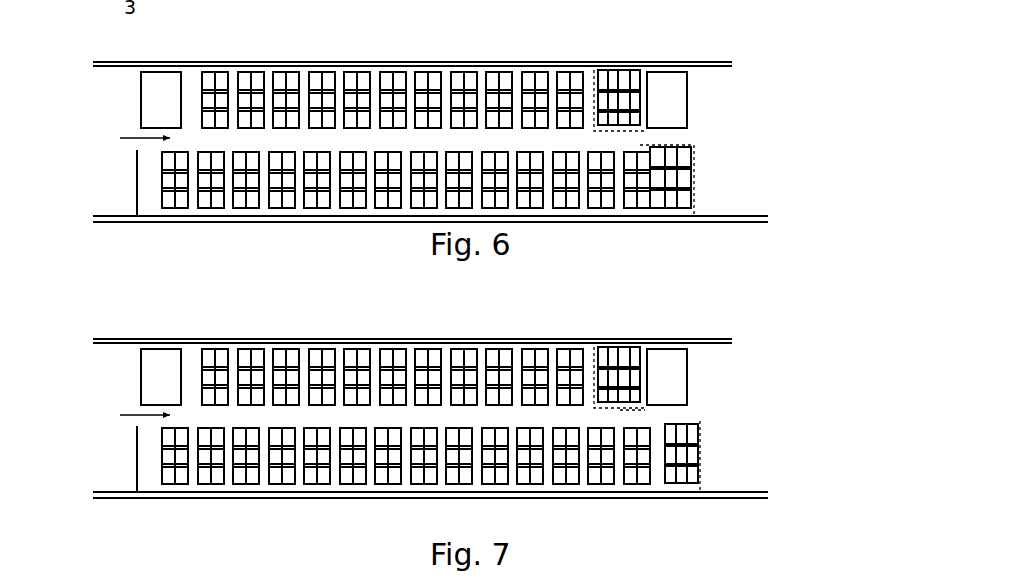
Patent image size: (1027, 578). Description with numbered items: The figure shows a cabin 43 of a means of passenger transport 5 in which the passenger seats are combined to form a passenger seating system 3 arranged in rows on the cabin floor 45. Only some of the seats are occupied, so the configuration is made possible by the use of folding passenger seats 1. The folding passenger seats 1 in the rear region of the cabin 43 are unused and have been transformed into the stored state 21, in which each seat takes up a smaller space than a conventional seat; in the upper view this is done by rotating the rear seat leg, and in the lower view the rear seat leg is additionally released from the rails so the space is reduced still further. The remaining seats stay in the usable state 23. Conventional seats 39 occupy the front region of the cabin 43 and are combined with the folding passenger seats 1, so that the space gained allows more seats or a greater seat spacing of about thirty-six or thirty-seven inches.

In FIG. 6, the folding passenger seat 1 is at (639, 70).
In FIG. 7, the folding passenger seat 1 is at (639, 347).
In FIG. 6, the passenger seating system 3 is at (181, 228).
In FIG. 7, the passenger seating system 3 is at (181, 504).
In FIG. 6, the means of passenger transport 5 is at (618, 223).
In FIG. 7, the means of passenger transport 5 is at (618, 499).
In FIG. 6, the stored state 21 is at (656, 98).
In FIG. 7, the stored state 21 is at (656, 374).
In FIG. 6, the usable state 23 is at (498, 78).
In FIG. 7, the usable state 23 is at (498, 355).
In FIG. 6, the conventional seat 39 is at (426, 62).
In FIG. 7, the conventional seat 39 is at (423, 339).
In FIG. 6, the cabin 43 is at (130, 138).
In FIG. 7, the cabin 43 is at (130, 415).
In FIG. 6, the cabin floor 45 is at (317, 142).
In FIG. 7, the cabin floor 45 is at (198, 432).